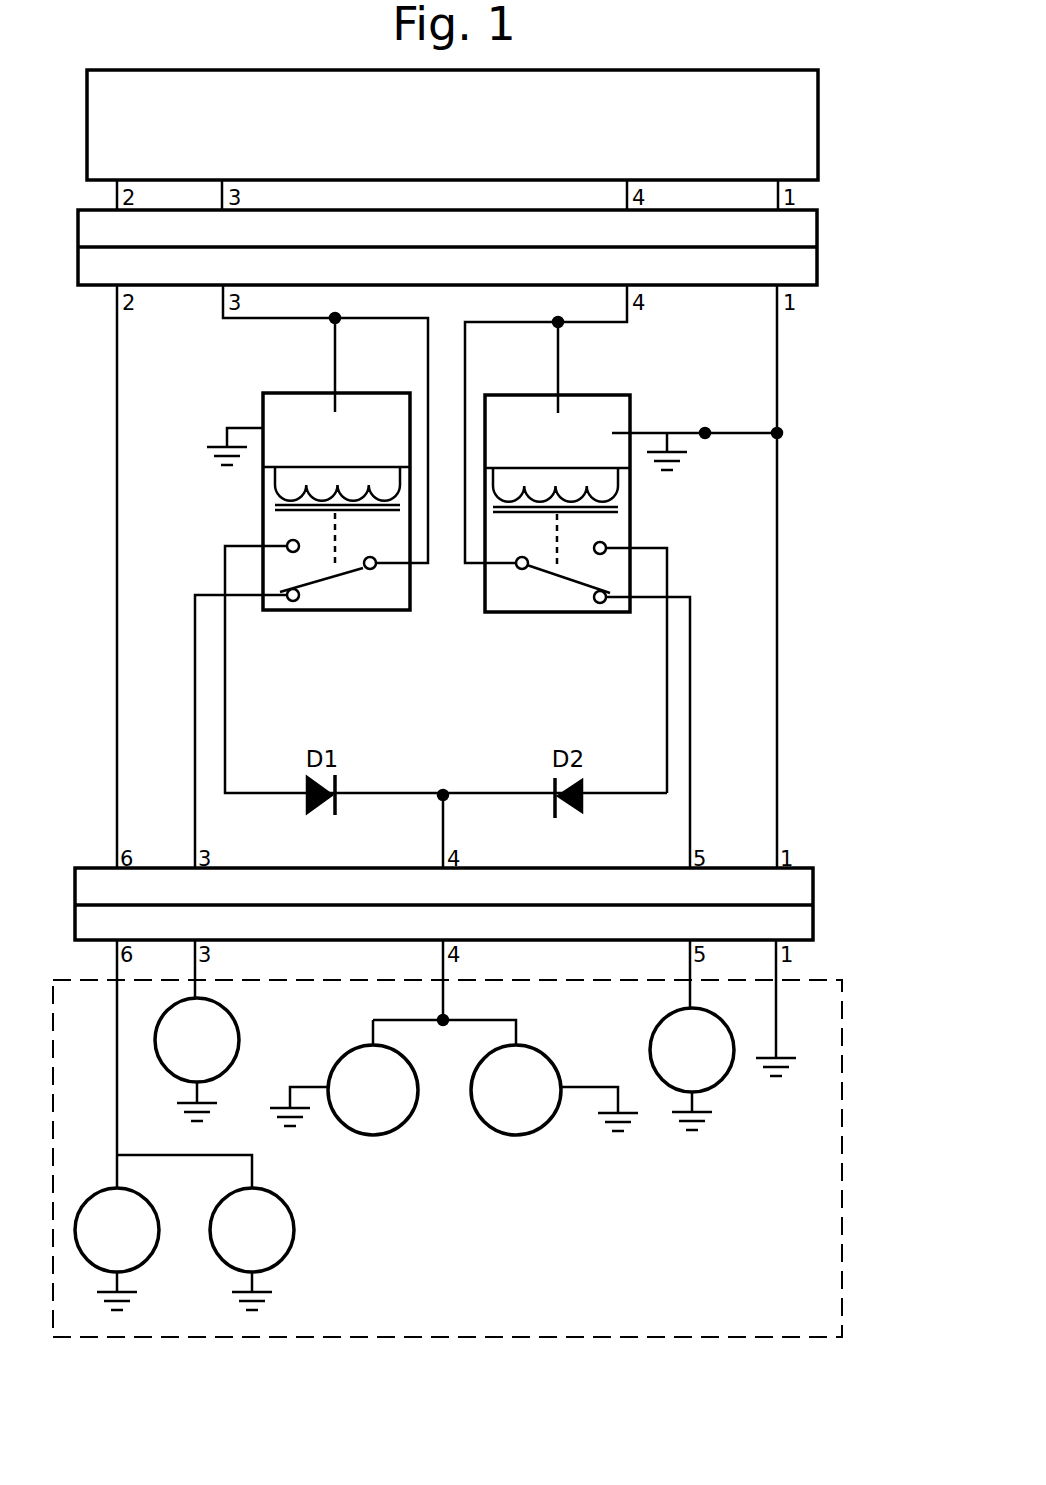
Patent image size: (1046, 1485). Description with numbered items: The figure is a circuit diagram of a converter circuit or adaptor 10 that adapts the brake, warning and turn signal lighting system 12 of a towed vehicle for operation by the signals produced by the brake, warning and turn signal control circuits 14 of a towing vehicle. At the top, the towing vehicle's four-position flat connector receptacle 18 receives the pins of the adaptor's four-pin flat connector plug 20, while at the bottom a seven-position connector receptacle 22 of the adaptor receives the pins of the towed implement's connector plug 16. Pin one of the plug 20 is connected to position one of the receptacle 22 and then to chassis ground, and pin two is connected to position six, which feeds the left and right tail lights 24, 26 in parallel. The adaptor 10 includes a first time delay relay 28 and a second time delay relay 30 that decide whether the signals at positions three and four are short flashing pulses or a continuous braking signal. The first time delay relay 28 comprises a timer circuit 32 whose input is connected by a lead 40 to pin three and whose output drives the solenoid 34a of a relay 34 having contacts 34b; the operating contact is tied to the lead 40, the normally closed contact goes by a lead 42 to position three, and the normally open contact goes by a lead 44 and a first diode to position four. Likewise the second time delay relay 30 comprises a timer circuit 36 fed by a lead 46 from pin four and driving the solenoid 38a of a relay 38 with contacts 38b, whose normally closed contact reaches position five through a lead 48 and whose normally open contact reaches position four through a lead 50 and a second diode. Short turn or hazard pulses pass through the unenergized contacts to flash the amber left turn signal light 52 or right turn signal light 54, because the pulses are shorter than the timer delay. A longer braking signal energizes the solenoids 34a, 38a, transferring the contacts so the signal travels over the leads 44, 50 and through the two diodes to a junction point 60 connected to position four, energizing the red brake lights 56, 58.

The converter circuit or adaptor 10 is at (855, 561).
The brake, warning and turn signal lighting system 12 is at (484, 1158).
The brake, warning and turn signal control circuits 14 is at (498, 125).
The connector plug 16 is at (493, 915).
The 4-position flat connector receptacle 18 is at (493, 214).
The 4-pin flat connector plug 20 is at (493, 263).
The 7-position connector receptacle 22 is at (480, 857).
The left tail light 24 is at (139, 1240).
The right tail light 26 is at (276, 1244).
The first time delay relay 28 is at (284, 521).
The second time delay relay 30 is at (610, 513).
The timer circuit 32 is at (308, 408).
The relay 34 is at (304, 616).
The solenoid 34a is at (279, 491).
The contacts 34b is at (345, 629).
The timer circuit 36 is at (631, 405).
The relay 38 is at (566, 606).
The solenoid 38a is at (600, 497).
The contacts 38b is at (526, 628).
The lead 40 is at (325, 424).
The lead 42 is at (207, 731).
The lead 44 is at (446, 669).
The lead 46 is at (546, 424).
The lead 48 is at (677, 732).
The lead 50 is at (631, 670).
The left turn signal light 52 is at (224, 1059).
The right turn signal light 54 is at (727, 1075).
The brake light 56 is at (358, 1108).
The brake light 58 is at (554, 1070).
The junction point 60 is at (463, 795).